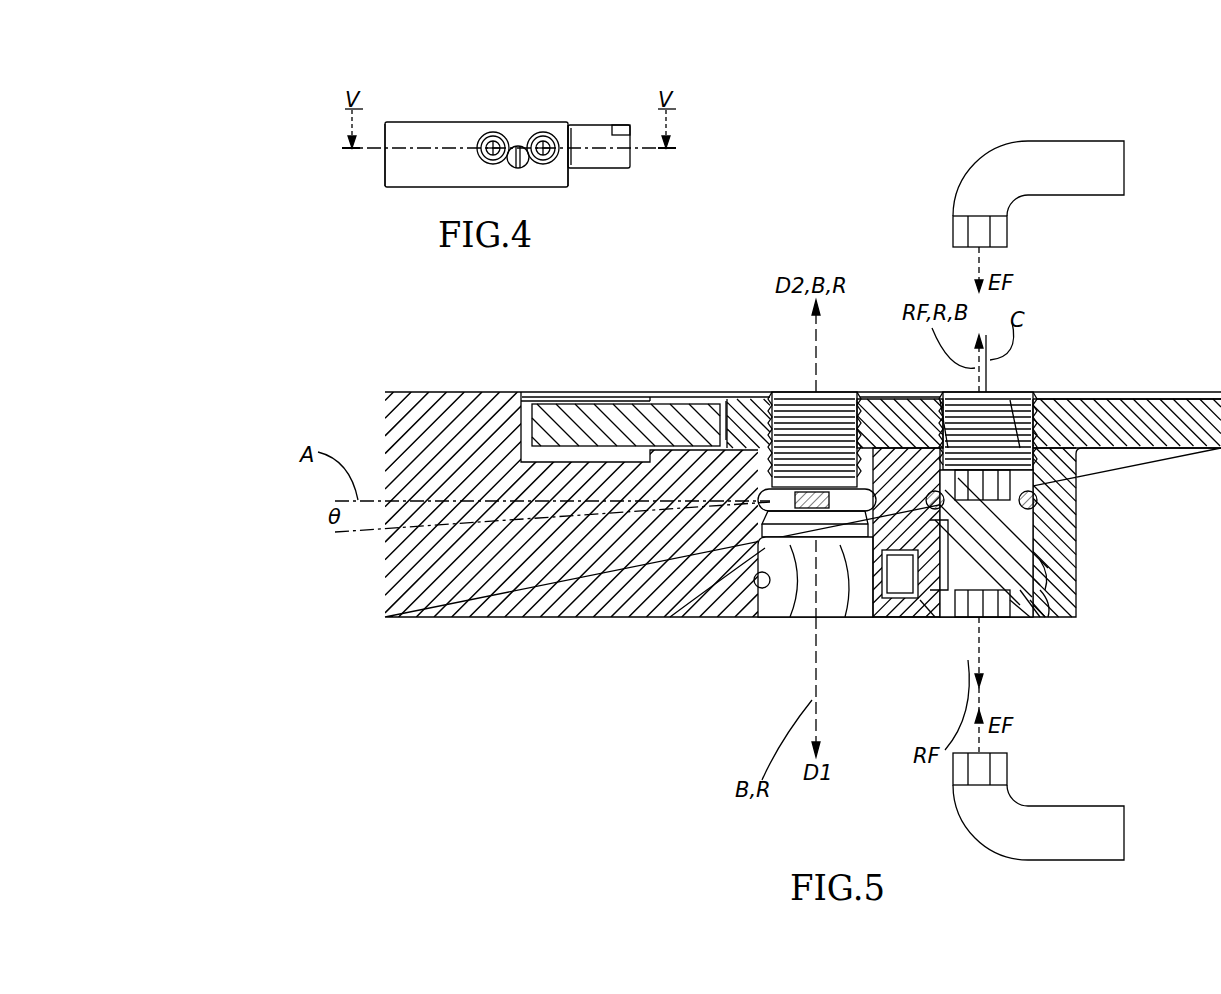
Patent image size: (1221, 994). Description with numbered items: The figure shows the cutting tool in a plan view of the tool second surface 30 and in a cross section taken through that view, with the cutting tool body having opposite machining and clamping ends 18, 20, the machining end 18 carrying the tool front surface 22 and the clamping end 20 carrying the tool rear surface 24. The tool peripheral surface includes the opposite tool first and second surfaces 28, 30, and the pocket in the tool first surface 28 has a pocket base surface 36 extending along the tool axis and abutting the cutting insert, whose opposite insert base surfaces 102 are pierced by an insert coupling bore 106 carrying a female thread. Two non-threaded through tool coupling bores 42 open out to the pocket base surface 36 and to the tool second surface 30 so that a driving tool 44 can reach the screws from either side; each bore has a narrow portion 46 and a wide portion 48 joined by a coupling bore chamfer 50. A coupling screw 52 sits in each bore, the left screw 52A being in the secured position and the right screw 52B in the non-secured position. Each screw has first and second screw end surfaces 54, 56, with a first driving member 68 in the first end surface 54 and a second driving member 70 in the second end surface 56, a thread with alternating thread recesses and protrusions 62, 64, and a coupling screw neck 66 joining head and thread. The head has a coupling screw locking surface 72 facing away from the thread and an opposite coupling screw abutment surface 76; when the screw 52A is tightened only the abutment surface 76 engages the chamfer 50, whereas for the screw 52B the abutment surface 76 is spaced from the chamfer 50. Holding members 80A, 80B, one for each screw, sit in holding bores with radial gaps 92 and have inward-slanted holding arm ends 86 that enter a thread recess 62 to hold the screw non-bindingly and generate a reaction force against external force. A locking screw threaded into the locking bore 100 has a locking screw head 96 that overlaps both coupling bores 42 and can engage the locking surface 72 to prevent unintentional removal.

In FIG. 4, the machining end 18 is at (582, 178).
In FIG. 4, the clamping end 20 is at (378, 158).
In FIG. 4, the tool front surface 22 is at (570, 188).
In FIG. 4, the tool rear surface 24 is at (385, 173).
In FIG. 5, the tool first surface 28 is at (497, 390).
In FIG. 5, the tool second surface 30 is at (480, 617).
In FIG. 5, the pocket base surface 36 is at (1076, 462).
In FIG. 5, the tool coupling bore 42 is at (765, 640).
In FIG. 5, the driving tool 44 is at (1040, 160).
In FIG. 5, the narrow portion 46 is at (852, 617).
In FIG. 5, the wide portion 48 is at (735, 617).
In FIG. 5, the coupling bore chamfer 50 is at (788, 617).
In FIG. 4, the coupling screw 52 is at (493, 112).
In FIG. 5, the coupling screw 52A is at (790, 393).
In FIG. 5, the coupling screw 52B is at (962, 620).
In FIG. 4, the first screw end surface 54 is at (543, 112).
In FIG. 5, the first screw end surface 54 is at (1023, 637).
In FIG. 5, the second screw end surface 56 is at (836, 380).
In FIG. 5, the thread recess 62 is at (1076, 570).
In FIG. 5, the thread protrusion 64 is at (1076, 592).
In FIG. 5, the coupling screw neck 66 is at (1076, 614).
In FIG. 4, the first driving member 68 is at (482, 140).
In FIG. 5, the first driving member 68 is at (920, 617).
In FIG. 5, the second driving member 70 is at (950, 392).
In FIG. 5, the coupling screw locking surface 72 is at (1045, 622).
In FIG. 5, the coupling screw abutment surface 76 is at (1055, 625).
In FIG. 5, the holding member 80A is at (722, 397).
In FIG. 5, the holding member 80B is at (1065, 392).
In FIG. 5, the holding arm end 86 is at (1076, 530).
In FIG. 5, the radial gap 92 is at (880, 392).
In FIG. 5, the locking screw head 96 is at (877, 632).
In FIG. 5, the locking bore 100 is at (848, 617).
In FIG. 5, the insert base surface 102 is at (670, 617).
In FIG. 5, the insert coupling bore 106 is at (1015, 392).